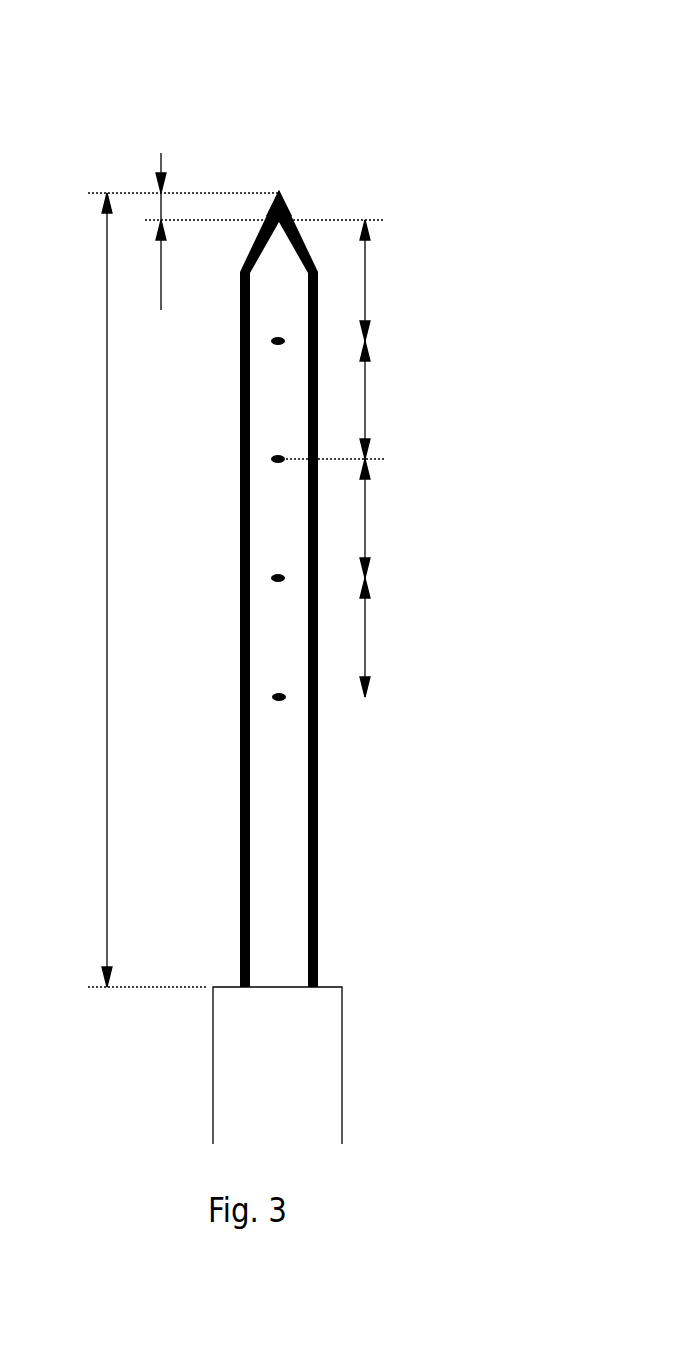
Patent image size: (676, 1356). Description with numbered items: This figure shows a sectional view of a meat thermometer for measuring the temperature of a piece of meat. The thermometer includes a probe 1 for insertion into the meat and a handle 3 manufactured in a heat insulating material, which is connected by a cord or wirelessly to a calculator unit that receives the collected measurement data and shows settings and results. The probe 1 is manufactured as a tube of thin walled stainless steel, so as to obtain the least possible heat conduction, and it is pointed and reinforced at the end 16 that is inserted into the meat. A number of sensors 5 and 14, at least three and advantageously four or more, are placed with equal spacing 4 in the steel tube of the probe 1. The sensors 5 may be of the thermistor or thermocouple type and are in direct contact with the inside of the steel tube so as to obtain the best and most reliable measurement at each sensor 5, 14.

The probe 1 is at (277, 893).
The handle 3 is at (247, 1068).
The spacing 4 is at (365, 281).
The sensors 5 is at (278, 341).
The sensor 14 is at (280, 697).
The end 16 is at (279, 193).